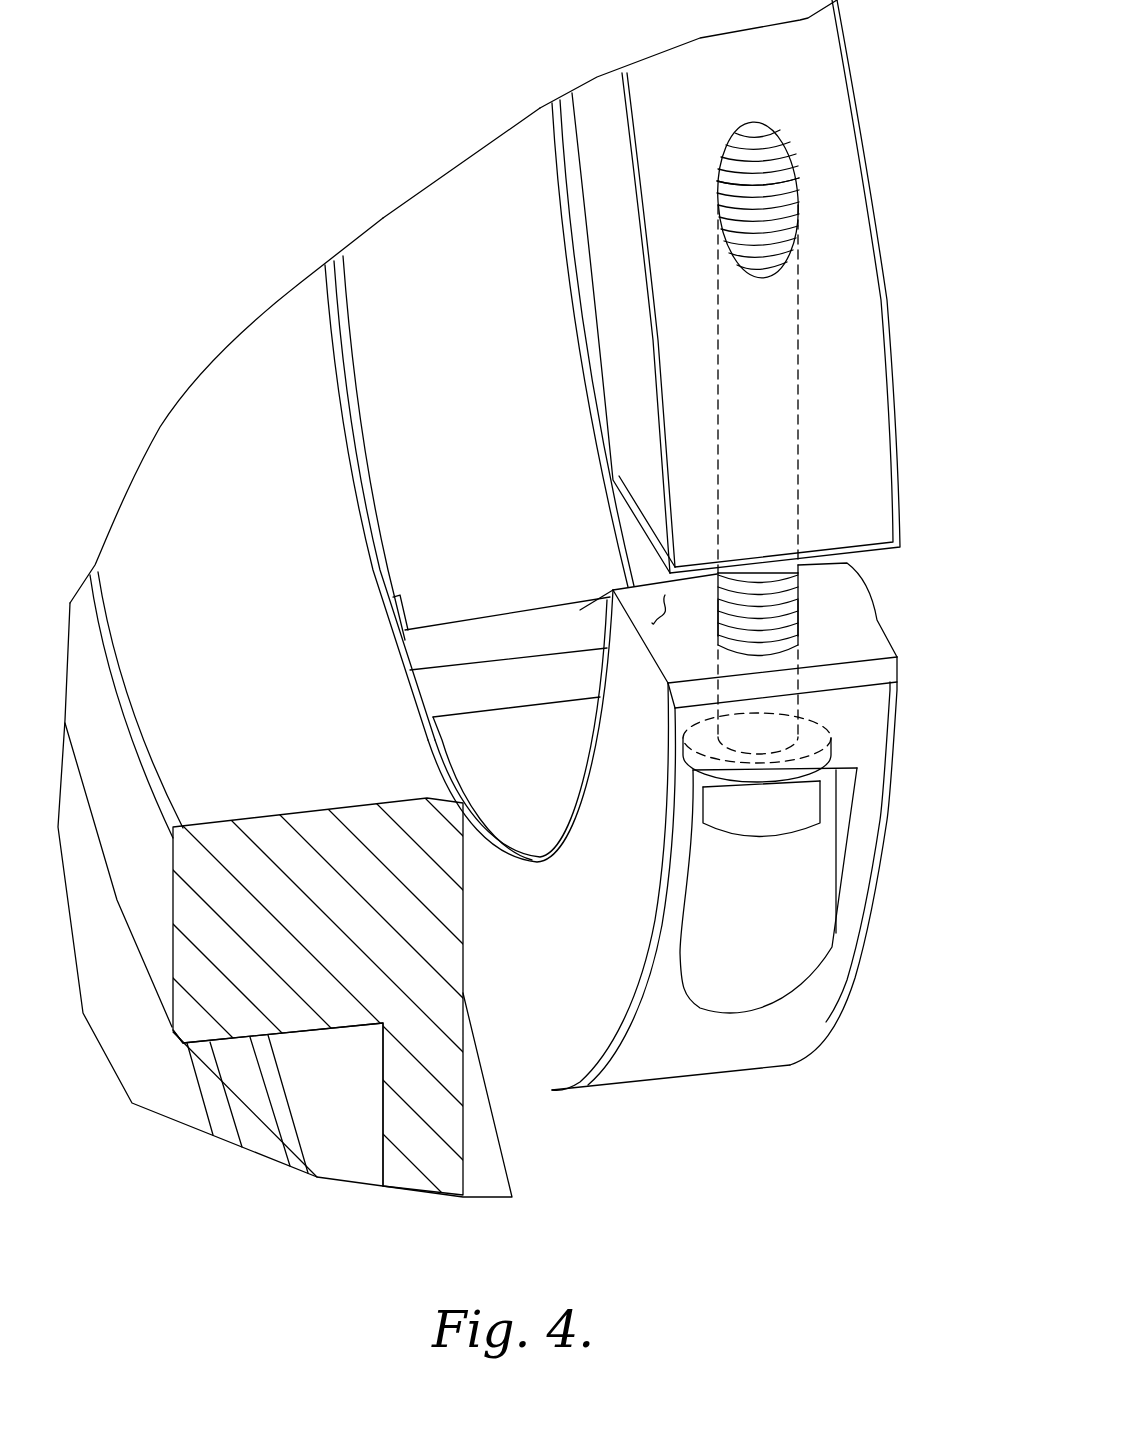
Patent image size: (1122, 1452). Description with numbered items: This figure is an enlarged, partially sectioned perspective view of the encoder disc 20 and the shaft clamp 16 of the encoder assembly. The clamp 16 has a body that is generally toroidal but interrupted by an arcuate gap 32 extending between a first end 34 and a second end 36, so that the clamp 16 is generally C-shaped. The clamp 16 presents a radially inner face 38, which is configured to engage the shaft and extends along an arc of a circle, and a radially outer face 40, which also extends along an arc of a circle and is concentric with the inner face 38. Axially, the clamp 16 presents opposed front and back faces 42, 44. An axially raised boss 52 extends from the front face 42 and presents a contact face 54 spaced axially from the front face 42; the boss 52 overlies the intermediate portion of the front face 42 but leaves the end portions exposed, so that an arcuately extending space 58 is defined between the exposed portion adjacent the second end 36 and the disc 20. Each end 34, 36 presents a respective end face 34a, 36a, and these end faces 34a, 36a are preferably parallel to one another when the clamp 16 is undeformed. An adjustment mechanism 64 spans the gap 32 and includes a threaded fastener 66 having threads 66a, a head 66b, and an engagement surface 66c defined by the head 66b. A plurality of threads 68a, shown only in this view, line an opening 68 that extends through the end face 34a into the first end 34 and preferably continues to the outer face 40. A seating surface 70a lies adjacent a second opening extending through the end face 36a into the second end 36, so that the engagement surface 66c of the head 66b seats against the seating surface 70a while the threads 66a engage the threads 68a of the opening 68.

The shaft clamp 16 is at (815, 95).
The encoder disc 20 is at (190, 455).
The gap 32 is at (843, 586).
The first end 34 is at (870, 497).
The end face 34a is at (632, 512).
The second end 36 is at (875, 700).
The end face 36a is at (613, 590).
The radially inner face 38 is at (482, 190).
The radially outer face 40 is at (757, 1046).
The front face 42 is at (548, 1050).
The back face 44 is at (860, 960).
The boss 52 is at (357, 415).
The contact face 54 is at (380, 562).
The second arcuately extending space 58 is at (440, 768).
The adjustment mechanism 64 is at (760, 582).
The threaded fastener 66 is at (797, 628).
The threads 66a is at (780, 630).
The head 66b is at (742, 825).
The engagement surface 66c is at (812, 728).
The opening 68 is at (778, 202).
The threads 68a is at (748, 188).
The seating surface 70a is at (828, 770).